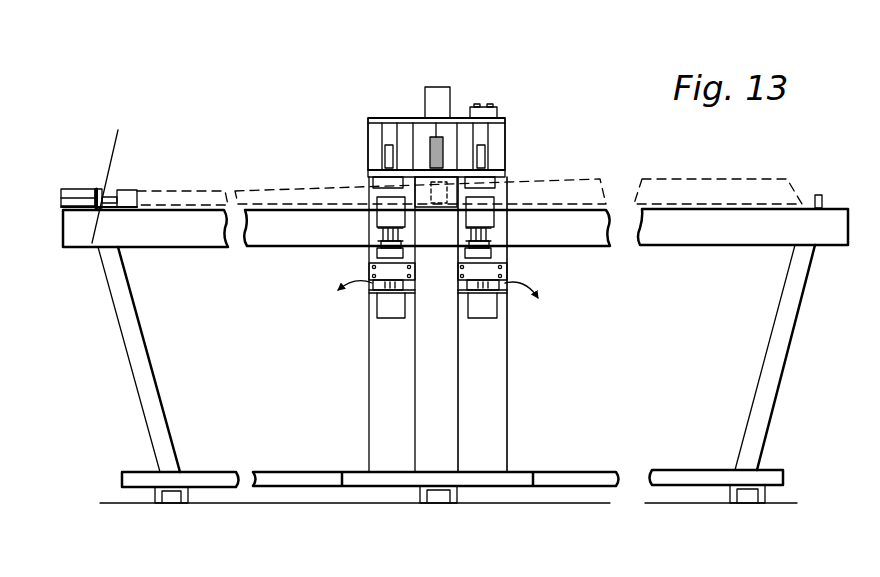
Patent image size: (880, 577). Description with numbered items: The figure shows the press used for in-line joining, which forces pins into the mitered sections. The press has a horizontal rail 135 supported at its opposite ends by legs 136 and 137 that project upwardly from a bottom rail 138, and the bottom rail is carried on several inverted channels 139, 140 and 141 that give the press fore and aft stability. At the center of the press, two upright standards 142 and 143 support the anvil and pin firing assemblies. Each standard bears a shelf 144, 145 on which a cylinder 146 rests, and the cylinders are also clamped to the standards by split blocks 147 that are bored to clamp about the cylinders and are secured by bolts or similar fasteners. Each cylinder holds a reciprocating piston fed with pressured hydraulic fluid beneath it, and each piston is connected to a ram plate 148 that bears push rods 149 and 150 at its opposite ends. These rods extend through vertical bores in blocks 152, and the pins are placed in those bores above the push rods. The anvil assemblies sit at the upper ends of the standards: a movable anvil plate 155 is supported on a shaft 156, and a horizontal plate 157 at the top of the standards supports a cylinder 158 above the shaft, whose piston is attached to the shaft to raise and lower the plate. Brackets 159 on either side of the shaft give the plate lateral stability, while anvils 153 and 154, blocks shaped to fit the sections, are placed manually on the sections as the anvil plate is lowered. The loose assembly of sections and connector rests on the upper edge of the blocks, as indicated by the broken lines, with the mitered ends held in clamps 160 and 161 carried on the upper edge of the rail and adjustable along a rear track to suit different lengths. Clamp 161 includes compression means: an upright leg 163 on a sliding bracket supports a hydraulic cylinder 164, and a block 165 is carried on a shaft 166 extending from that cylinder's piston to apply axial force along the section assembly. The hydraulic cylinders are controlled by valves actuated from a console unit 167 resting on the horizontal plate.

The horizontal rail 135 is at (727, 240).
The leg 136 is at (162, 423).
The leg 137 is at (770, 398).
The bottom rail 138 is at (772, 477).
The inverted channel 139 is at (728, 493).
The inverted channel 140 is at (455, 492).
The inverted channel 141 is at (188, 503).
The upright standard 142 is at (380, 395).
The upright standard 143 is at (490, 398).
The shelf 144 is at (490, 310).
The shelf 145 is at (390, 308).
The cylinder 146 is at (380, 288).
The split block 147 is at (369, 267).
The ram plate 148 is at (493, 248).
The push rod 149 is at (378, 235).
The push rod 150 is at (493, 237).
The block 152 is at (375, 205).
The anvil 153 is at (382, 183).
The anvil 154 is at (497, 182).
The movable anvil plate 155 is at (505, 170).
The shaft 156 is at (428, 147).
The horizontal plate 157 is at (505, 122).
The cylinder 158 is at (437, 87).
The bracket 159 is at (483, 152).
The clamp 160 is at (818, 192).
The clamp 161 is at (92, 243).
The upright leg 163 is at (115, 177).
The hydraulic cylinder 164 is at (63, 198).
The block 165 is at (123, 197).
The shaft 166 is at (102, 194).
The console unit 167 is at (483, 107).